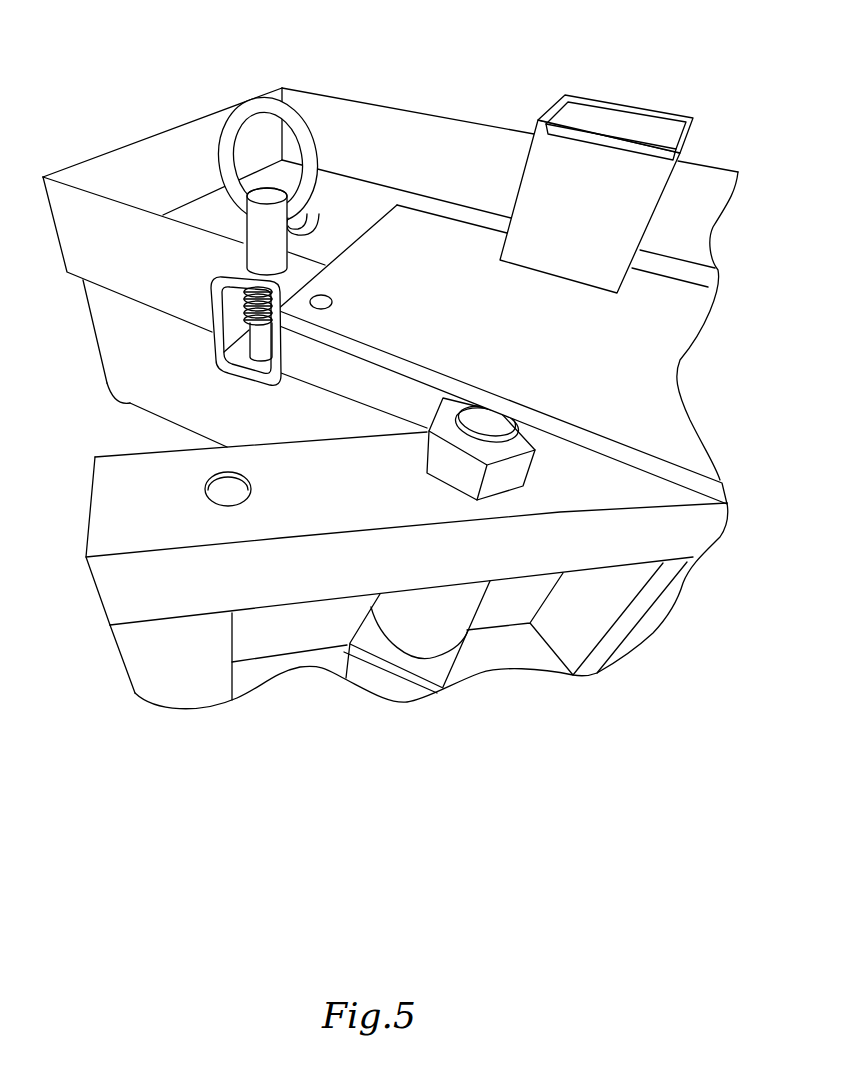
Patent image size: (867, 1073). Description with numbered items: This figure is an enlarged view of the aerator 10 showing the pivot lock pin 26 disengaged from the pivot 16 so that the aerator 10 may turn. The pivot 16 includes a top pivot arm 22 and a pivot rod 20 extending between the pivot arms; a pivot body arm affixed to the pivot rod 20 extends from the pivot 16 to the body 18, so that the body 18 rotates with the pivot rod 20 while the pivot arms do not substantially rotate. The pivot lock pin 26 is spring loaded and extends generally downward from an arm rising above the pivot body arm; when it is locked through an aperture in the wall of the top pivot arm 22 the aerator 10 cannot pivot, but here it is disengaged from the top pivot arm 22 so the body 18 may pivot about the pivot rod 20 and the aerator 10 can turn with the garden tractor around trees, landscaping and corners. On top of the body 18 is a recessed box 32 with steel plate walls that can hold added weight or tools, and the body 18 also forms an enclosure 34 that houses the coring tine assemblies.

The aerator 10 is at (669, 65).
The pivot 16 is at (90, 503).
The body 18 is at (160, 132).
The pivot rod 20 is at (457, 600).
The top pivot arm 22 is at (122, 593).
The pivot lock pin 26 is at (240, 265).
The box 32 is at (435, 130).
The enclosure 34 is at (113, 347).